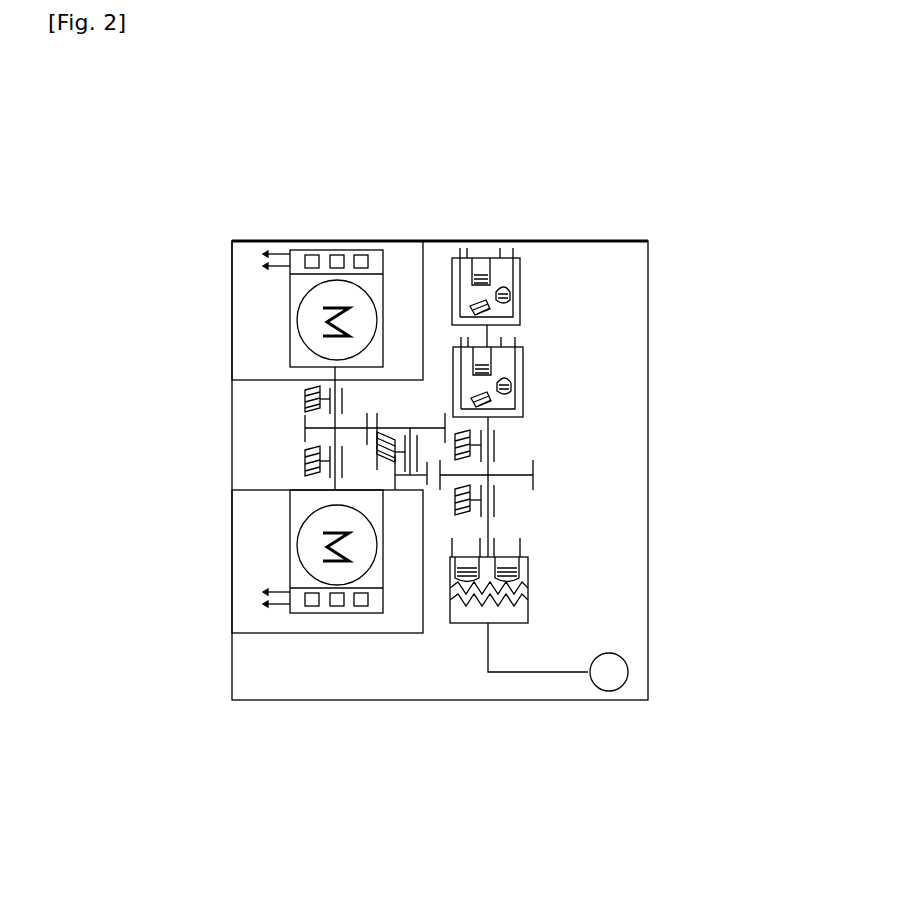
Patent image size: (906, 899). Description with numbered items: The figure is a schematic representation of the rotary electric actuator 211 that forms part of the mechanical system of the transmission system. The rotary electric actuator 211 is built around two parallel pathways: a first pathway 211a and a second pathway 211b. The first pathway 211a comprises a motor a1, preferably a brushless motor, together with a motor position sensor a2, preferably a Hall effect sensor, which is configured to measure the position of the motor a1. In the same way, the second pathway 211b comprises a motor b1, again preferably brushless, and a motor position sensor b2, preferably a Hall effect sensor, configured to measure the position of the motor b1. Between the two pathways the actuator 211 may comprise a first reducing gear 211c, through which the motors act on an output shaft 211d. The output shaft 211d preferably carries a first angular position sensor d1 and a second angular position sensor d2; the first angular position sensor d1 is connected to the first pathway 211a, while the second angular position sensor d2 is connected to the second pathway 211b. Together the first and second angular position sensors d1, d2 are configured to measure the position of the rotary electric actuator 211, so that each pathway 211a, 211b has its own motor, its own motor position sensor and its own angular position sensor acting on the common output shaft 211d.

The rotary electric actuator 211 is at (170, 174).
The first pathway 211a is at (423, 270).
The second pathway 211b is at (272, 633).
The first reducing gear 211c is at (498, 440).
The output shaft 211d is at (557, 672).
The motor a1 is at (290, 331).
The motor position sensor a2 is at (290, 272).
The motor b1 is at (290, 541).
The motor position sensor b2 is at (290, 600).
The first angular position sensor d1 is at (523, 260).
The second angular position sensor d2 is at (525, 356).